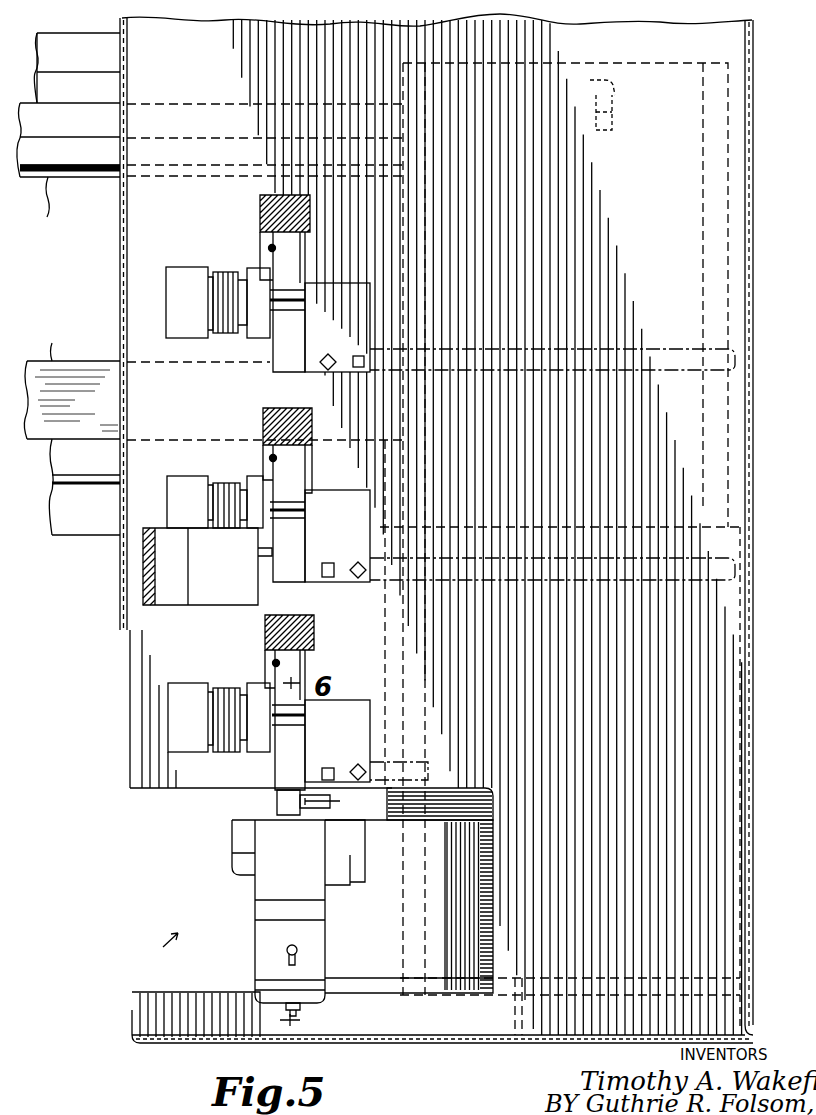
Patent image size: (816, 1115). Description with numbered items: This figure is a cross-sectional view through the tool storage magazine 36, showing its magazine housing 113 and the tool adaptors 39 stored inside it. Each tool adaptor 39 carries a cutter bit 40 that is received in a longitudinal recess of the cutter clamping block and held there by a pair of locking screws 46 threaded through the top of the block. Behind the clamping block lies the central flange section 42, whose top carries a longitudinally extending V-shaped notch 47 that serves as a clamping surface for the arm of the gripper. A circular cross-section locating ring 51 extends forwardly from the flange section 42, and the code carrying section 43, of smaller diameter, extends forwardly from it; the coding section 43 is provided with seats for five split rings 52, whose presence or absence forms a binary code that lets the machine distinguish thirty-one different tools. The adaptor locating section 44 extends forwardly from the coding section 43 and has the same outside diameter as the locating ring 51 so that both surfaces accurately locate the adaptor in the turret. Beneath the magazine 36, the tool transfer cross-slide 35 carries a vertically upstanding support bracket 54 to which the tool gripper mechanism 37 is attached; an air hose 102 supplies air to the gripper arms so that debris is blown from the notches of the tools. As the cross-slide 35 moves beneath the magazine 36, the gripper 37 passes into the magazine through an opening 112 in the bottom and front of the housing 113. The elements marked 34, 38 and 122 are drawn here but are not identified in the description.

The drive assembly 34 is at (154, 952).
The tool transfer cross-slide 35 is at (499, 1008).
The tool storage magazine 36 is at (130, 1054).
The tool gripper mechanism 37 is at (222, 854).
The bracket 38 is at (269, 382).
The tool adaptor 39 is at (285, 330).
The cutter bit 40 is at (691, 350).
The central flange section 42 is at (303, 463).
The code carrying section 43 is at (205, 294).
The adaptor locating section 44 is at (178, 323).
The locking screws 46 is at (357, 565).
The V-shaped notch 47 is at (304, 505).
The locating ring 51 is at (259, 275).
The split rings 52 is at (228, 338).
The support bracket 54 is at (374, 890).
The air hose 102 is at (318, 803).
The opening 112 is at (128, 873).
The magazine housing 113 is at (753, 725).
The block 122 is at (256, 430).